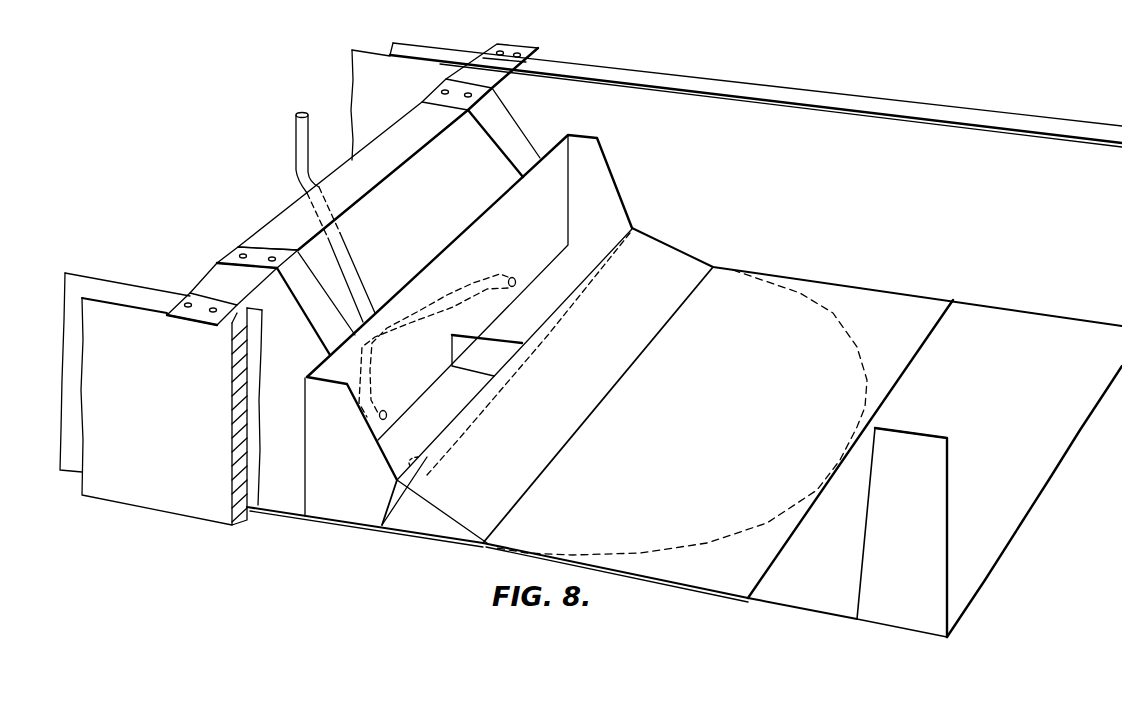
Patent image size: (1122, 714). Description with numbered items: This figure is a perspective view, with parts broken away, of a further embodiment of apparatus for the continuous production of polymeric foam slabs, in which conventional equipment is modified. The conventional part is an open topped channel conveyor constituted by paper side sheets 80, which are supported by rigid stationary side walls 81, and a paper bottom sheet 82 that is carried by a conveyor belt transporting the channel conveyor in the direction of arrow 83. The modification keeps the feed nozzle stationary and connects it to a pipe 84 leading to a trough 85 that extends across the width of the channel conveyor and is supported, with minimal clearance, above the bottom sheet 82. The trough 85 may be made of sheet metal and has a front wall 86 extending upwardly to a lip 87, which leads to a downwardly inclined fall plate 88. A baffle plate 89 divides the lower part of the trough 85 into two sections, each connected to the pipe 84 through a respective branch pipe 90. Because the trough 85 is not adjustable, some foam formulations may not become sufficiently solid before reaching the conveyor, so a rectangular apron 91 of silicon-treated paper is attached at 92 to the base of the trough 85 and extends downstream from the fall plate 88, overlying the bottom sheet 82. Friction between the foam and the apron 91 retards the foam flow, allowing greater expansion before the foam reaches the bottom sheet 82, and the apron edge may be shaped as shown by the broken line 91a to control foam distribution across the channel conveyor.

The paper side sheets 80 is at (853, 120).
The rigid stationary side walls 81 is at (673, 77).
The paper bottom sheet 82 is at (783, 592).
The arrow 83 is at (1104, 449).
The pipe 84 is at (303, 140).
The trough 85 is at (632, 213).
The front wall 86 is at (427, 456).
The lip 87 is at (487, 387).
The fall plate 88 is at (667, 260).
The baffle plate 89 is at (480, 358).
The branch pipe 90 is at (472, 290).
The rectangular apron 91 is at (927, 318).
The broken line 91a is at (870, 279).
The attachment point 92 is at (327, 523).